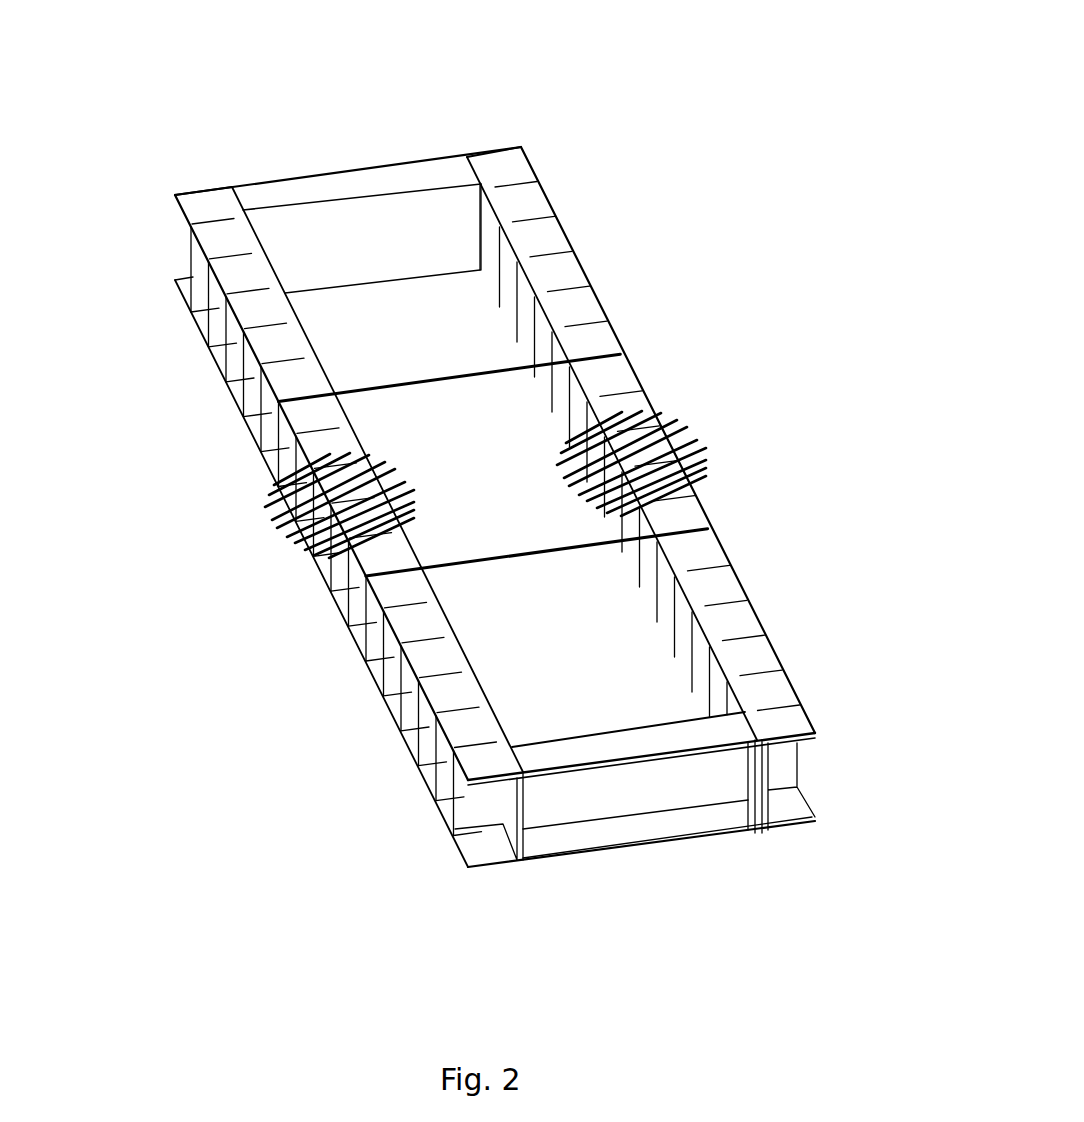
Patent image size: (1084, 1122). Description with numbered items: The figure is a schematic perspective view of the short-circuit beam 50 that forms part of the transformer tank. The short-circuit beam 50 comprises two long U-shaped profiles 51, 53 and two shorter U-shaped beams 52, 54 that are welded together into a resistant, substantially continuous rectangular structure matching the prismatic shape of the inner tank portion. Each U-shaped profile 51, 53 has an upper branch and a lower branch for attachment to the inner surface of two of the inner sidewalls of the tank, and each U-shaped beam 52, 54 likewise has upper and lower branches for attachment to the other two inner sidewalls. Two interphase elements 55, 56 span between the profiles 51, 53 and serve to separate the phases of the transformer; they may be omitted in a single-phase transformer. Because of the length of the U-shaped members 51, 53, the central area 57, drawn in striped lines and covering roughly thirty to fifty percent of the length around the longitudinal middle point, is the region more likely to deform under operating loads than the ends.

The short-circuit beam 50 is at (252, 132).
The U-shaped profile 51 is at (317, 440).
The U-shaped beam 52 is at (332, 186).
The U-shaped profile 53 is at (623, 413).
The U-shaped beam 54 is at (540, 862).
The interphase element 55 is at (463, 406).
The interphase element 56 is at (620, 562).
The central area 57 is at (697, 441).